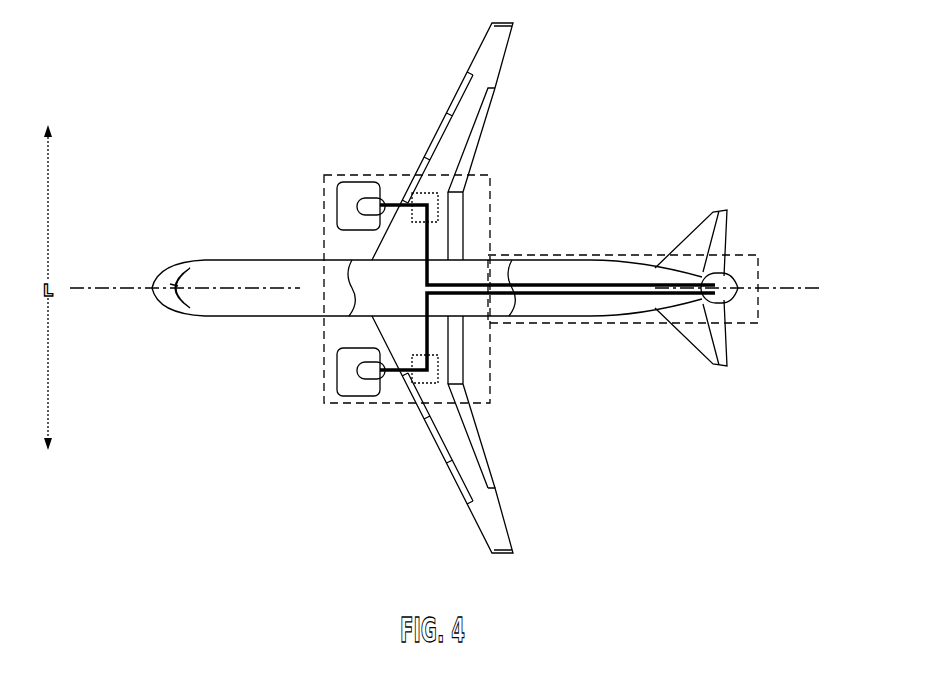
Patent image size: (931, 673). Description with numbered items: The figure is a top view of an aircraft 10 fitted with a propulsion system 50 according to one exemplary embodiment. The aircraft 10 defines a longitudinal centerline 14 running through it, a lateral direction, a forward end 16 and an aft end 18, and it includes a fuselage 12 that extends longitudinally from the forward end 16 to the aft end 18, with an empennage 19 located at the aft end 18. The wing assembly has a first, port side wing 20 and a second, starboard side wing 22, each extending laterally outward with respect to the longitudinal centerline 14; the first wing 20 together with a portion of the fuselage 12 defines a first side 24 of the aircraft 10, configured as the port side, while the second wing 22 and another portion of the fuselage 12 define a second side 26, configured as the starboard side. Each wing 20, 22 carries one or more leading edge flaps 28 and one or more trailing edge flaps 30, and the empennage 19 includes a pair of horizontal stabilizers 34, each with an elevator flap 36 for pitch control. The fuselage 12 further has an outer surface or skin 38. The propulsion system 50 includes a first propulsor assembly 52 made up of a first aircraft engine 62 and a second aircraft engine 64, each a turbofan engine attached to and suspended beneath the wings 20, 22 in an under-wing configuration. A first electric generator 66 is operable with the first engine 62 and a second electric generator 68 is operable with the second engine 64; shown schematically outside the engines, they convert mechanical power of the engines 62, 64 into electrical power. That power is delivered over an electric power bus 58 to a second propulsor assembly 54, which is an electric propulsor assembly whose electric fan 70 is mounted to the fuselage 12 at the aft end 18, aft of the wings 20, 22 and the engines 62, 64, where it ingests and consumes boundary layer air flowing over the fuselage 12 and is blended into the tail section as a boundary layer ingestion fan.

The aircraft 10 is at (457, 288).
The fuselage 12 is at (198, 308).
The longitudinal centerline 14 is at (813, 302).
The forward end 16 is at (151, 302).
The aft end 18 is at (694, 365).
The empennage 19 is at (660, 336).
The first, port side wing 20 is at (455, 434).
The second, starboard side wing 22 is at (497, 44).
The first side 24 is at (262, 330).
The second side 26 is at (266, 257).
The leading edge flap 28 is at (435, 445).
The trailing edge flap 30 is at (485, 447).
The horizontal stabilizer 34 is at (712, 228).
The elevator flap 36 is at (729, 222).
The outer surface or skin 38 is at (571, 302).
The propulsion system 50 is at (545, 253).
The first propulsor assembly 52 is at (306, 366).
The second propulsor assembly 54 is at (741, 335).
The electric power bus 58 is at (474, 302).
The first aircraft engine 62 is at (346, 390).
The second aircraft engine 64 is at (350, 186).
The first electric generator 66 is at (410, 382).
The second electric generator 68 is at (439, 210).
The electric fan 70 is at (733, 264).